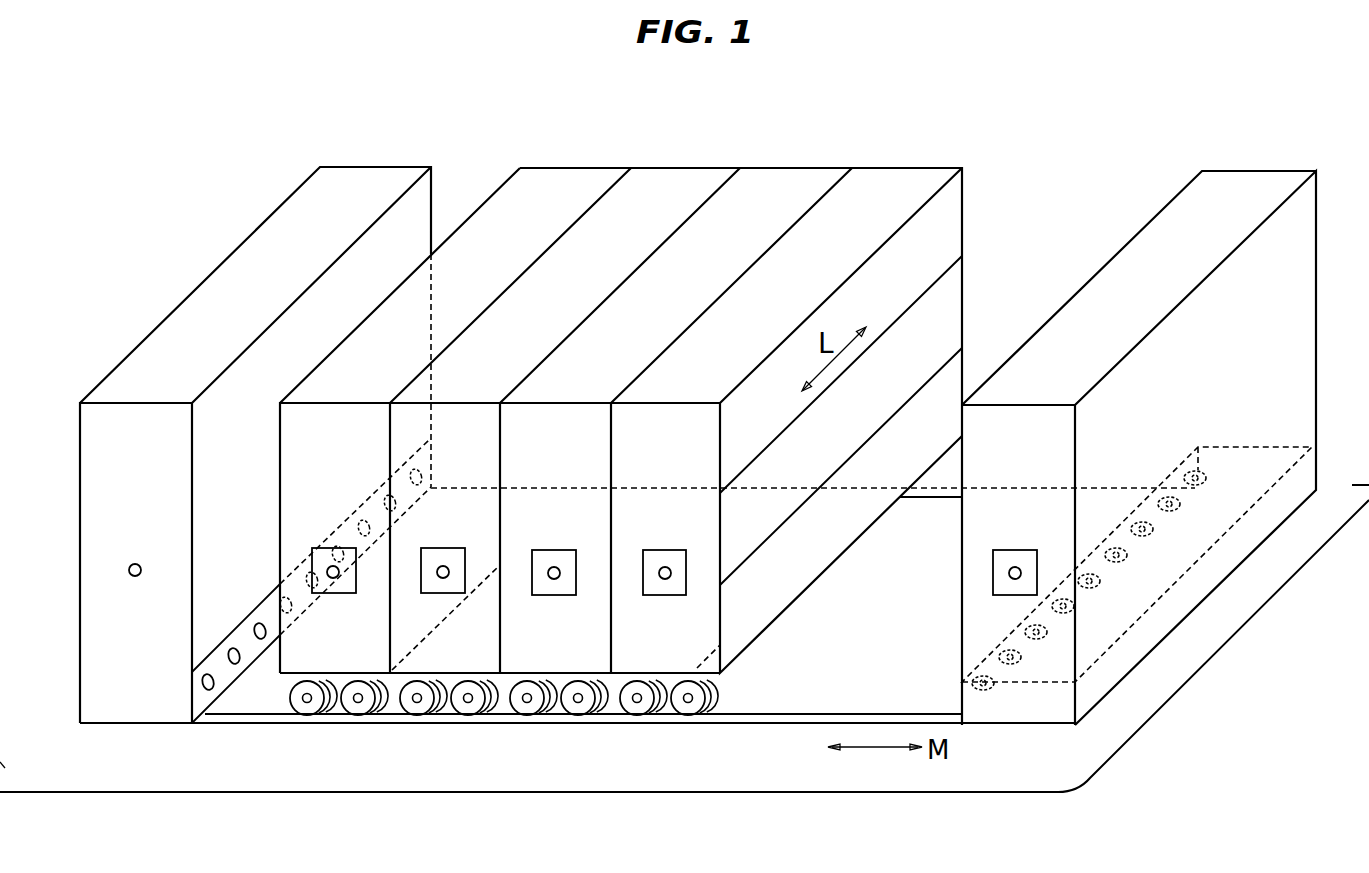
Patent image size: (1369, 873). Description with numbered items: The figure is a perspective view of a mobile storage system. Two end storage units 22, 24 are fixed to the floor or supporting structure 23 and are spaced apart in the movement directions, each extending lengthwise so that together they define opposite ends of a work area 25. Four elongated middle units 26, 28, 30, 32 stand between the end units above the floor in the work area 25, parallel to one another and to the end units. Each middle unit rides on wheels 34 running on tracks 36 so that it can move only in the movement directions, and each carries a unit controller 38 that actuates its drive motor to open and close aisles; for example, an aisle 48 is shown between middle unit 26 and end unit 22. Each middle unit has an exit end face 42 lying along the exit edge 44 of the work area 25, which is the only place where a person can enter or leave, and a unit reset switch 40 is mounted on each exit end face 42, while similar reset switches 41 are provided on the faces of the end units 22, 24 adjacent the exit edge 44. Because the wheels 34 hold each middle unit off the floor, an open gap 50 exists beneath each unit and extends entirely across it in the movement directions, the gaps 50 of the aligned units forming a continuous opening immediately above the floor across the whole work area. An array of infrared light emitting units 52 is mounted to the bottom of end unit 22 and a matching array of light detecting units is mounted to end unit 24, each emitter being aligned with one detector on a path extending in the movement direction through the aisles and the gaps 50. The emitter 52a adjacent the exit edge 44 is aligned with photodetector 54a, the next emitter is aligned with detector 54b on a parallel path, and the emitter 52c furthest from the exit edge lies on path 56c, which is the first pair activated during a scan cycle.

The end storage unit 22 is at (1277, 262).
The floor or supporting structure 23 is at (1232, 647).
The end storage unit 24 is at (95, 571).
The work area 25 is at (815, 686).
The middle unit 26 is at (890, 177).
The middle unit 28 is at (797, 178).
The middle unit 30 is at (662, 178).
The middle unit 32 is at (568, 178).
The wheels 34 is at (519, 724).
The tracks 36 is at (547, 714).
The unit controller 38 is at (462, 573).
The unit reset switch 40 is at (333, 579).
The reset switch 41 is at (135, 564).
The exit end face 42 is at (348, 469).
The exit edge 44 is at (434, 724).
The aisle 48 is at (1026, 190).
The gap 50 is at (843, 626).
The light emitting units 52 is at (1102, 582).
The emitter 52a is at (991, 684).
The emitter 52c is at (1172, 503).
The photodetector 54a is at (209, 691).
The detector 54b is at (236, 647).
The path 56c is at (1097, 487).